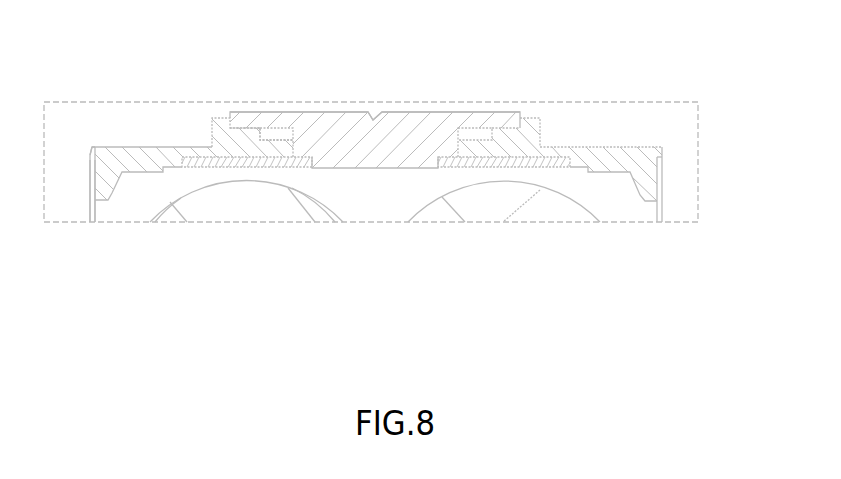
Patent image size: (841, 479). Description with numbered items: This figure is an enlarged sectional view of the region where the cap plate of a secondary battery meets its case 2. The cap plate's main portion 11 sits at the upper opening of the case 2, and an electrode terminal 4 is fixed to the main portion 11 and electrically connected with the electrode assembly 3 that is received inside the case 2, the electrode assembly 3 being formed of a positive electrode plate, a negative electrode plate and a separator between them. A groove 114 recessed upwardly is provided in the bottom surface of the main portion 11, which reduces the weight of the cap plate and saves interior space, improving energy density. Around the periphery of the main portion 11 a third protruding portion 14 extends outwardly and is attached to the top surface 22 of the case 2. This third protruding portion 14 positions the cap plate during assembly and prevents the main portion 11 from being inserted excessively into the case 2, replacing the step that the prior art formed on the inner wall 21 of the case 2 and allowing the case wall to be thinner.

The case 2 is at (89, 210).
The inner wall 21 is at (96, 212).
The top surface 22 is at (91, 149).
The third protruding portion 14 is at (94, 150).
The main portion 11 is at (172, 148).
The electrode terminal 4 is at (337, 120).
The groove 114 is at (343, 181).
The electrode assembly 3 is at (247, 210).